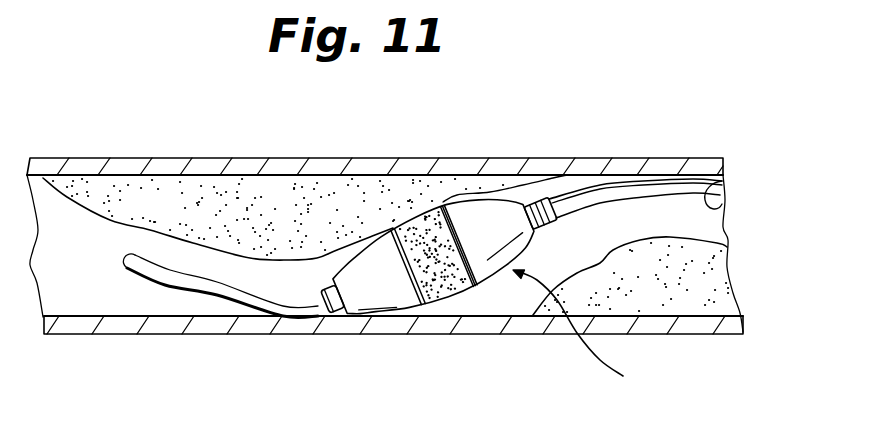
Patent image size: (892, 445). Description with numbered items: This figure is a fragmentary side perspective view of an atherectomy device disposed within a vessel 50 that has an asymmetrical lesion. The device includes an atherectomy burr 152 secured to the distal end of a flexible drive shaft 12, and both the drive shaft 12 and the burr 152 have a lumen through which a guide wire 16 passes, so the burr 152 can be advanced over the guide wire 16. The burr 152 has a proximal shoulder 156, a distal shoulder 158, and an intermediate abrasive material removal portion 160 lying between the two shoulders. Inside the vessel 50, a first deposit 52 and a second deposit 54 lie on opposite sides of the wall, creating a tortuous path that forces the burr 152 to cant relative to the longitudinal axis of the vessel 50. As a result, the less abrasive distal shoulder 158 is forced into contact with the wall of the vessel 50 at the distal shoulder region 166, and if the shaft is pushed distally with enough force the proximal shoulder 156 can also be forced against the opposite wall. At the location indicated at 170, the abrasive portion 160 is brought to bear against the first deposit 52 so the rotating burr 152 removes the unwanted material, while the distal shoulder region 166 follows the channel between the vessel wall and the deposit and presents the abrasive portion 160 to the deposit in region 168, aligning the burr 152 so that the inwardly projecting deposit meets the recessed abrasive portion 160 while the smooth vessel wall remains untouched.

The flexible drive shaft 12 is at (708, 205).
The guide wire 16 is at (193, 290).
The vessel 50 is at (690, 165).
The first deposit 52 is at (100, 190).
The second deposit 54 is at (700, 290).
The atherectomy burr 152 is at (592, 336).
The proximal shoulder 156 is at (487, 212).
The distal shoulder 158 is at (377, 285).
The material removal portion 160 is at (463, 287).
The distal shoulder region 166 is at (388, 313).
The region 168 is at (273, 283).
The abrasive contact location 170 is at (413, 218).